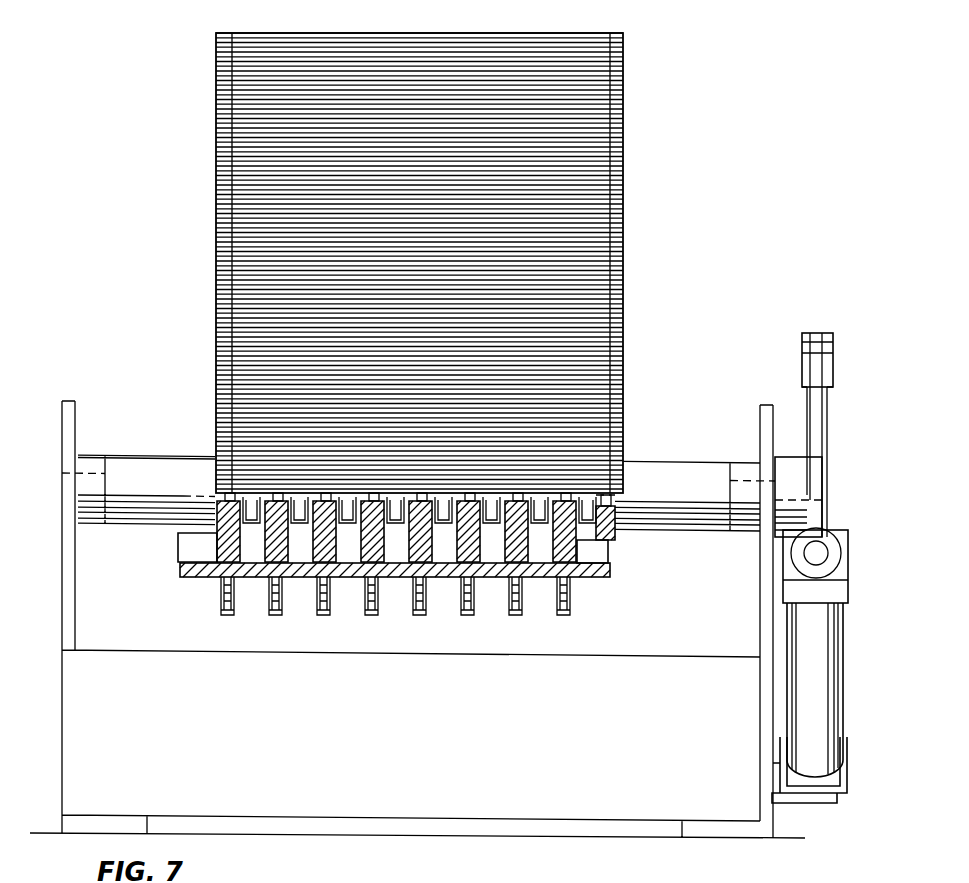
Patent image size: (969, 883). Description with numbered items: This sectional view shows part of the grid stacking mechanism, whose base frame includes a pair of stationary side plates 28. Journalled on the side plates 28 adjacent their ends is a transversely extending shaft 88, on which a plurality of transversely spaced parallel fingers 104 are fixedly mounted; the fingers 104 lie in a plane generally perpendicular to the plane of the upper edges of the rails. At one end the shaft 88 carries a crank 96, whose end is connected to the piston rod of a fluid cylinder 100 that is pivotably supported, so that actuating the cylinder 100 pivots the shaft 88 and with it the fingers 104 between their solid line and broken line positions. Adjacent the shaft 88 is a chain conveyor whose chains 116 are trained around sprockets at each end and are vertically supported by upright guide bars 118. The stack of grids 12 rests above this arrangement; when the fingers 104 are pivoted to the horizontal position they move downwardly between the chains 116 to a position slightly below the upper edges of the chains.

The stack of sheets 12 is at (625, 315).
The stationary side plates 28 is at (63, 623).
The transversely extending shaft 88 is at (666, 463).
The crank 96 is at (822, 418).
The fluid cylinder 100 is at (830, 676).
The fingers 104 is at (393, 497).
The chains 116 is at (476, 493).
The upright guide bars 118 is at (213, 552).